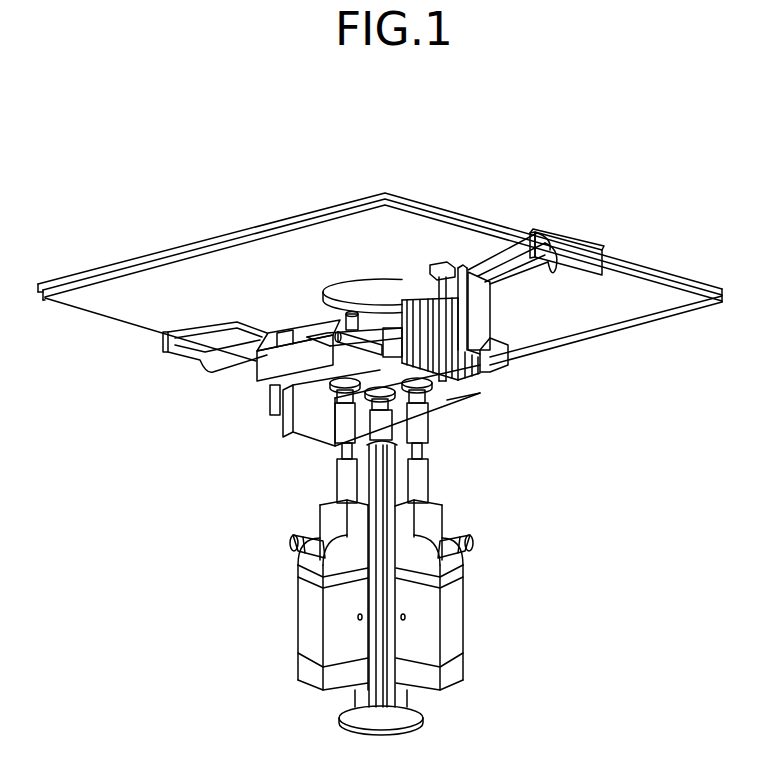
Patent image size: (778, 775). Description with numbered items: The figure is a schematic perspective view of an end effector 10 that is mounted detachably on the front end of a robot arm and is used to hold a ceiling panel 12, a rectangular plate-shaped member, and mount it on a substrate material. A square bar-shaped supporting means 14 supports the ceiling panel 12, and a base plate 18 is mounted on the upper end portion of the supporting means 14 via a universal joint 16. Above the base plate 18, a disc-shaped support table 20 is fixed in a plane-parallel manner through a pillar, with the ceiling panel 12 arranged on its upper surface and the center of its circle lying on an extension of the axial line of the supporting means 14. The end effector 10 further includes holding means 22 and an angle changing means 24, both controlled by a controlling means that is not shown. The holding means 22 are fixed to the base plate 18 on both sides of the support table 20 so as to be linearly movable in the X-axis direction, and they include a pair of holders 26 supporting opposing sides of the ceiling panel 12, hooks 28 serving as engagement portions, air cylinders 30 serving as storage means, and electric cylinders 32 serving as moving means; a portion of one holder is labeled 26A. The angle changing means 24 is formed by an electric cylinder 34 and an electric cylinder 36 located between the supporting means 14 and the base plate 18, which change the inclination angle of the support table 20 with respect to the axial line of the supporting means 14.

The end effector 10 is at (186, 470).
The ceiling panel 12 is at (313, 253).
The supporting means 14 is at (395, 480).
The universal joint 16 is at (378, 403).
The base plate 18 is at (308, 390).
The support table 20 is at (366, 305).
The holding means 22 is at (487, 138).
The angle changing means 24 is at (545, 587).
The holder 26 is at (508, 268).
The column 26A is at (477, 308).
The hook 28 is at (565, 253).
The air cylinder 30 is at (440, 352).
The electric cylinder 32 is at (290, 362).
The electric cylinder 34 is at (333, 628).
The electric cylinder 36 is at (452, 598).